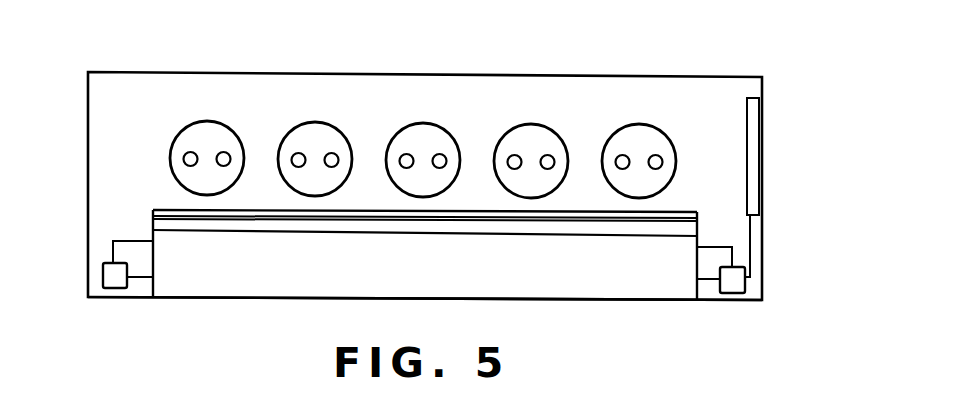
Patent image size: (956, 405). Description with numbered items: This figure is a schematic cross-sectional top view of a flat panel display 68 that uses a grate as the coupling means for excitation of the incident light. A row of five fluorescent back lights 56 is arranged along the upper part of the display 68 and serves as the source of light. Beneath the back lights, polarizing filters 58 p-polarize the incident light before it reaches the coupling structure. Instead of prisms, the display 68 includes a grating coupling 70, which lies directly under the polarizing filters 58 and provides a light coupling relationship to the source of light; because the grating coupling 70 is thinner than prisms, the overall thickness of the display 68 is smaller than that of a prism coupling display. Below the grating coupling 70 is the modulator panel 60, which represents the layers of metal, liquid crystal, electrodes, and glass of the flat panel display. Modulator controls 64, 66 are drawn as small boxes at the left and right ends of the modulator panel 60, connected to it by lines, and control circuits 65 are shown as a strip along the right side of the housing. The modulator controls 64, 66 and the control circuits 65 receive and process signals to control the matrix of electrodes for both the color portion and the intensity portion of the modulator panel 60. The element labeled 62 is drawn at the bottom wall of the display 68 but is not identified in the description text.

The fluorescent back lights 56 is at (638, 124).
The polarizing filters 58 is at (153, 210).
The modulator panel 60 is at (217, 276).
The base 62 is at (278, 300).
The modulator control 64 is at (110, 275).
The control circuits 65 is at (762, 181).
The modulator control 66 is at (747, 287).
The display 68 is at (781, 154).
The grating coupling 70 is at (153, 228).